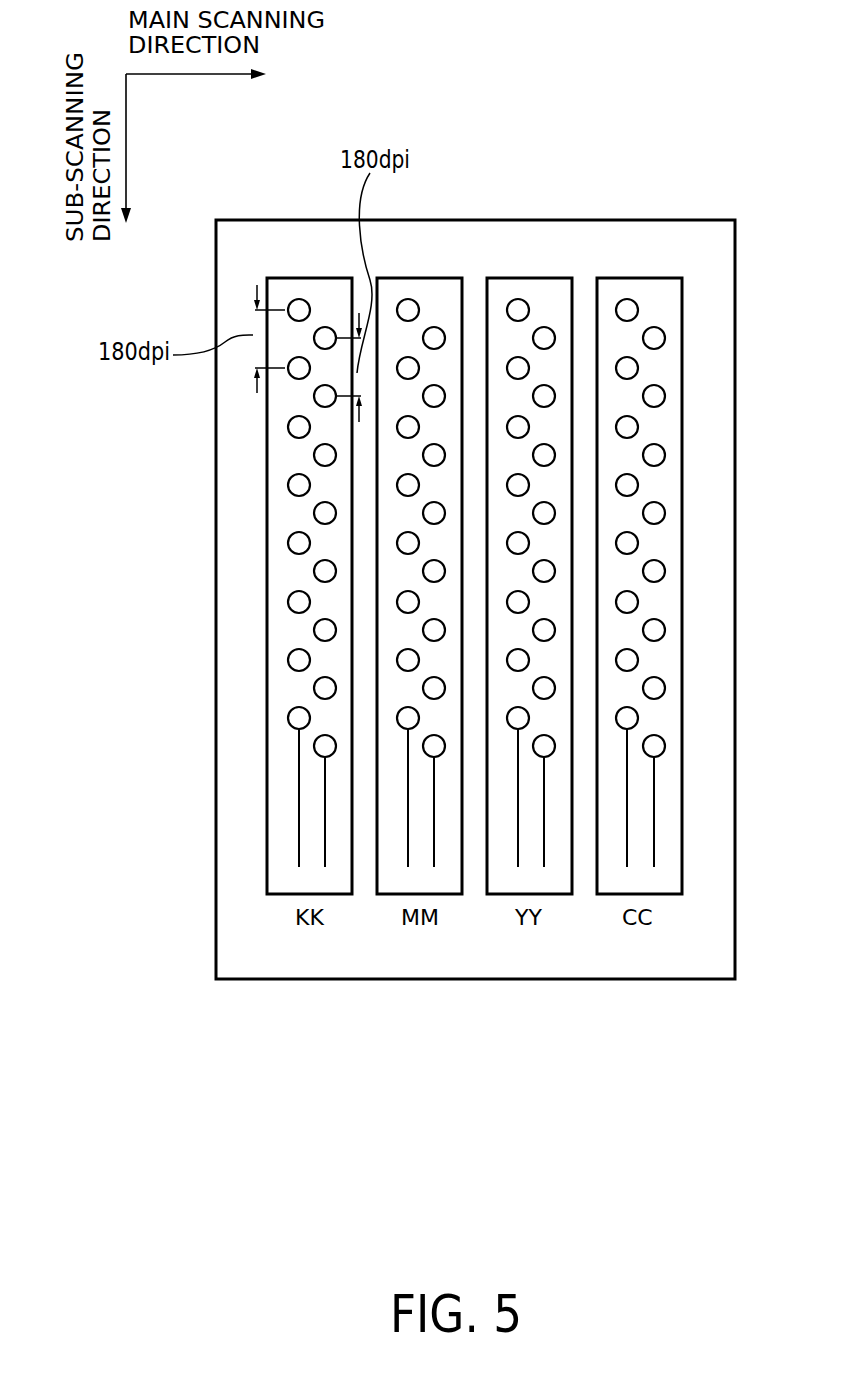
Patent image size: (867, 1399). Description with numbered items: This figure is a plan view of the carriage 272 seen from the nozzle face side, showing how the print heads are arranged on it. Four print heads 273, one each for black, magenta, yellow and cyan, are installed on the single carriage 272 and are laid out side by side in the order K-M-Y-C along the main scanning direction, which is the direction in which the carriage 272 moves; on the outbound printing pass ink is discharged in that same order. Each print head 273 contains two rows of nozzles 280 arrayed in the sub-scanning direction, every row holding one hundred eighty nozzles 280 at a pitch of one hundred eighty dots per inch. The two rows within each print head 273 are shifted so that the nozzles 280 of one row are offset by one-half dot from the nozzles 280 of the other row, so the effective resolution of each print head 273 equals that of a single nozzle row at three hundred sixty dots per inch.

The carriage 272 is at (690, 219).
The print head 273 is at (335, 894).
The nozzle 280 is at (287, 603).